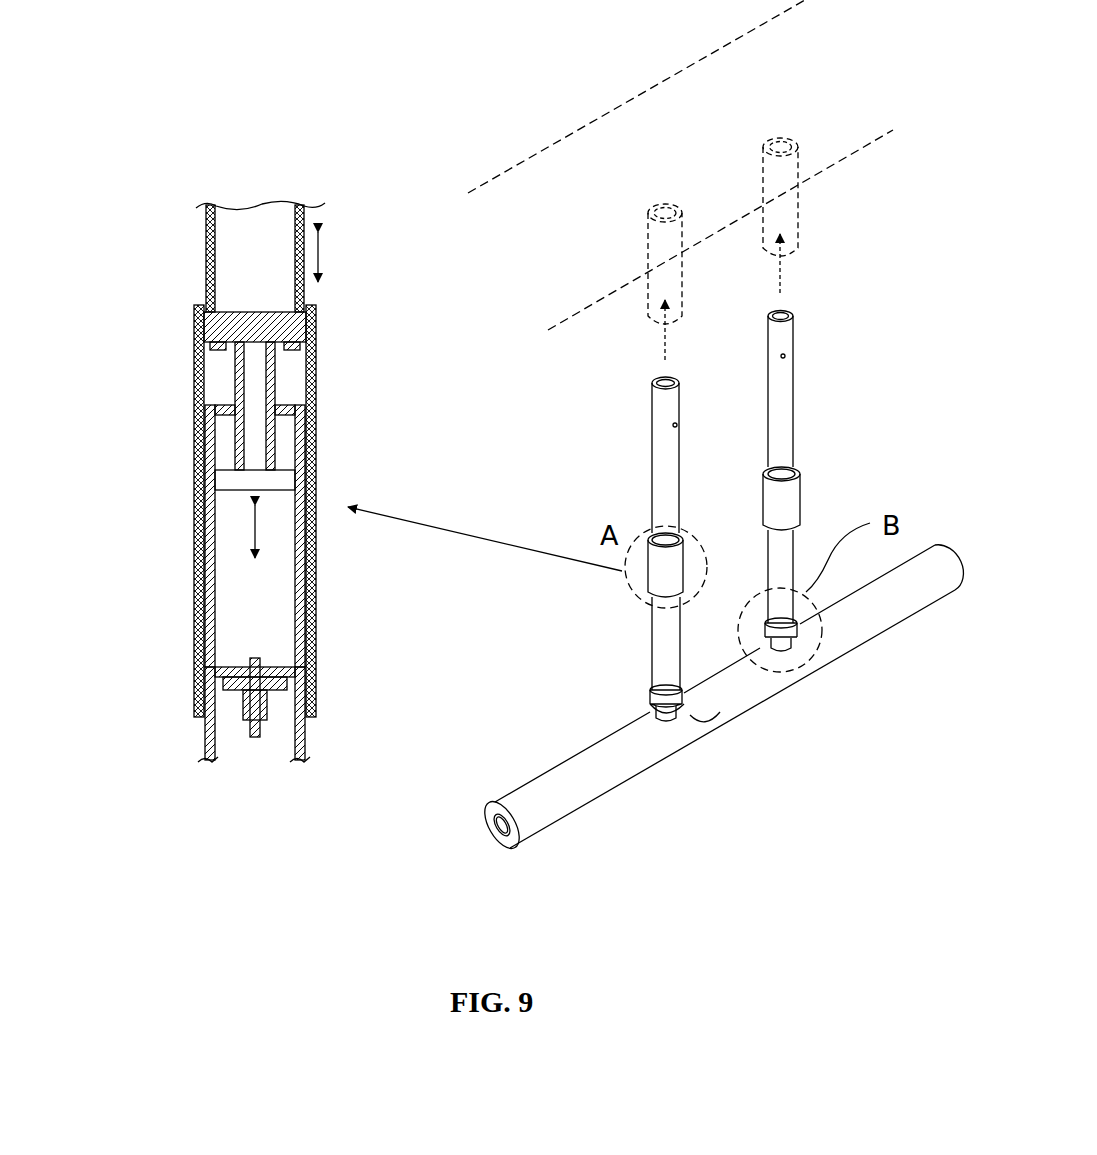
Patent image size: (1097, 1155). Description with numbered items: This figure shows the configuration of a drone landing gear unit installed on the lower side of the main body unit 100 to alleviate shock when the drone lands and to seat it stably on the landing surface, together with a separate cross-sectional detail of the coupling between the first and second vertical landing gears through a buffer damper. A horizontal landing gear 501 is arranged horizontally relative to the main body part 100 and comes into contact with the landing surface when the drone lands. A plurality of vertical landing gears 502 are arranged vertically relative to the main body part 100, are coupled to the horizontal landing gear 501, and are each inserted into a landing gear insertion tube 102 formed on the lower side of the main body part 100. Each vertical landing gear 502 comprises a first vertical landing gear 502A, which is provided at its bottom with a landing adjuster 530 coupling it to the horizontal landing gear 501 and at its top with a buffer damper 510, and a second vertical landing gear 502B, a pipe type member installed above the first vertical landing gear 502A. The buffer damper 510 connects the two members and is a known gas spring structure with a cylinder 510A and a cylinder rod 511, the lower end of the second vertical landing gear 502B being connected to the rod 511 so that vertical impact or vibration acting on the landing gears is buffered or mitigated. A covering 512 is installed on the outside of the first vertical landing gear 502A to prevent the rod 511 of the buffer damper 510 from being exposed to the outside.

The main body unit 100 is at (545, 178).
The landing gear insertion tube 102 is at (787, 210).
The horizontal landing gear 501 is at (568, 783).
The vertical landing gear 502 is at (640, 453).
The first vertical landing gear 502A is at (192, 737).
The second vertical landing gear 502B is at (206, 250).
The buffer damper 510 is at (240, 597).
The cylinder 510A is at (305, 440).
The cylinder rod 511 is at (305, 360).
The covering 512 is at (194, 392).
The landing adjuster 530 is at (690, 712).